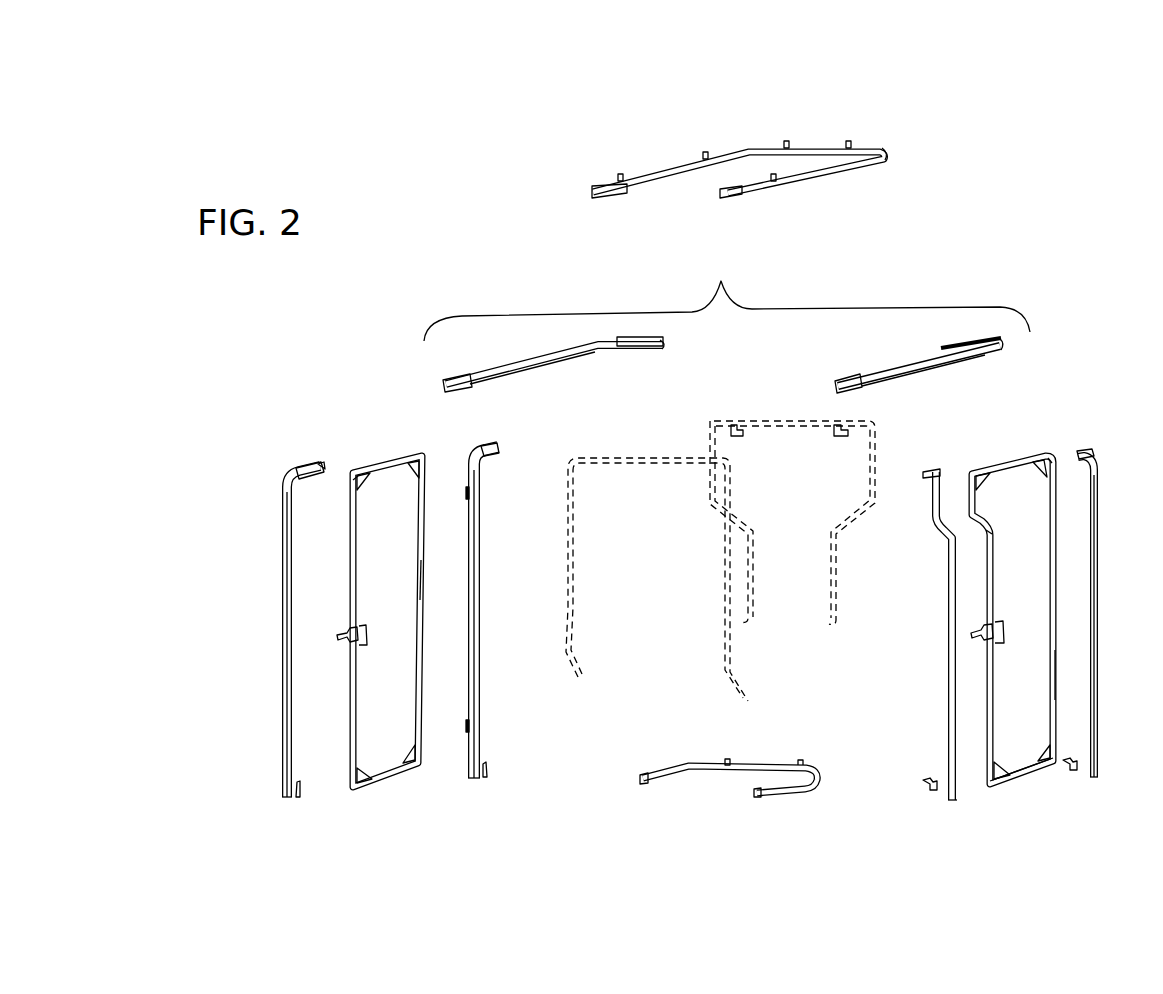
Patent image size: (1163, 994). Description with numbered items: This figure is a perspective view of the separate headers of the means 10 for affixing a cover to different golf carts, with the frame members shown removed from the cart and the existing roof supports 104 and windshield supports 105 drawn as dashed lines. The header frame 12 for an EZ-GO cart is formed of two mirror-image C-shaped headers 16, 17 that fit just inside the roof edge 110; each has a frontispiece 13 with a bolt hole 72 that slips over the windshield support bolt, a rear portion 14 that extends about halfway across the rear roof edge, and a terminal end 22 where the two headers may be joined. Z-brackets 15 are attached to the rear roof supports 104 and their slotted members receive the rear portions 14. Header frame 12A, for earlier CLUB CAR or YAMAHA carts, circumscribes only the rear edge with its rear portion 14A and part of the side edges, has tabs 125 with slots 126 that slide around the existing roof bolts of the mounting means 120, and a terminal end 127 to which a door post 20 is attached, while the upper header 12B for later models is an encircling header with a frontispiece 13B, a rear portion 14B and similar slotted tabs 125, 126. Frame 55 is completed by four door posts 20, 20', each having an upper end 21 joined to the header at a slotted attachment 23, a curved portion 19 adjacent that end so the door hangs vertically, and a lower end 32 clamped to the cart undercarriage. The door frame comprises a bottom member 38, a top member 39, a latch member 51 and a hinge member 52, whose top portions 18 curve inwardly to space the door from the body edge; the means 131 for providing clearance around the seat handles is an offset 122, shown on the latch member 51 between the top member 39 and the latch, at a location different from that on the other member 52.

The means for affixing 10 is at (482, 172).
The edge of roof 110 is at (1060, 217).
The header frame 12 is at (721, 282).
The header frame 12A is at (707, 789).
The upper header 12B is at (753, 160).
The frontispiece 13 is at (470, 390).
The frontispiece 13B is at (684, 229).
The rear portion 14 is at (645, 352).
The rear portion 14A is at (765, 762).
The rear portion 14B is at (816, 147).
The Z-bracket 15 is at (838, 432).
The C-shaped header 16 is at (886, 373).
The C-shaped header 17 is at (571, 360).
The top portion 18 is at (348, 476).
The curved portion 19 is at (293, 628).
The door post 20 is at (812, 610).
The door post 20' is at (576, 628).
The end of door post 21 is at (297, 467).
The terminal end 22 is at (665, 343).
The attachment 23 is at (319, 465).
The lower end 32 is at (287, 799).
The bottom member 38 is at (1030, 777).
The top member 39 is at (1024, 617).
The latch member 51 is at (352, 680).
The hinge member 52 is at (415, 592).
The frame 55 is at (628, 728).
The bolt hole 72 is at (598, 198).
The roof support 104 is at (830, 623).
The windshield support 105 is at (728, 627).
The means for mounting 120 is at (720, 533).
The offset 122 is at (355, 480).
The tab 125 is at (851, 141).
The slot 126 is at (787, 140).
The terminal end 127 is at (645, 785).
The means for providing clearance 131 is at (957, 468).